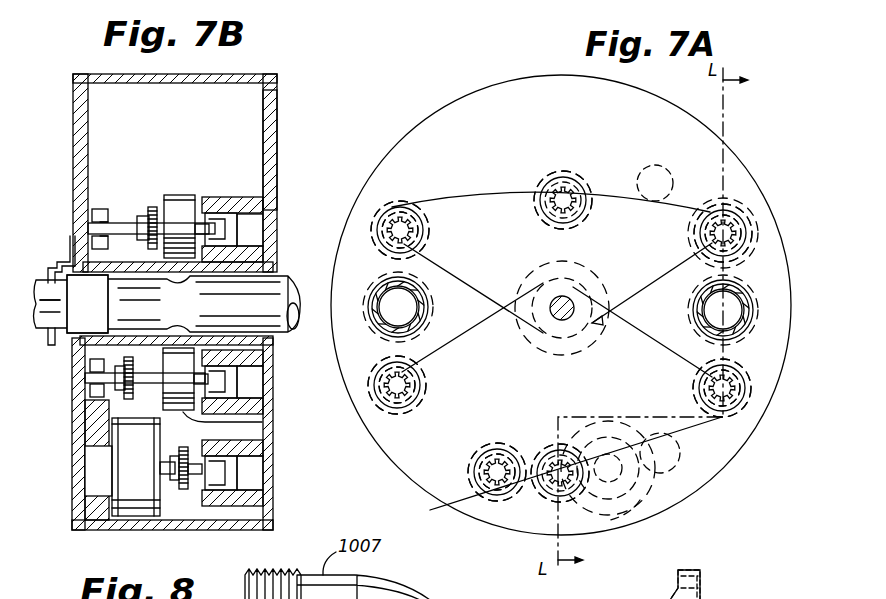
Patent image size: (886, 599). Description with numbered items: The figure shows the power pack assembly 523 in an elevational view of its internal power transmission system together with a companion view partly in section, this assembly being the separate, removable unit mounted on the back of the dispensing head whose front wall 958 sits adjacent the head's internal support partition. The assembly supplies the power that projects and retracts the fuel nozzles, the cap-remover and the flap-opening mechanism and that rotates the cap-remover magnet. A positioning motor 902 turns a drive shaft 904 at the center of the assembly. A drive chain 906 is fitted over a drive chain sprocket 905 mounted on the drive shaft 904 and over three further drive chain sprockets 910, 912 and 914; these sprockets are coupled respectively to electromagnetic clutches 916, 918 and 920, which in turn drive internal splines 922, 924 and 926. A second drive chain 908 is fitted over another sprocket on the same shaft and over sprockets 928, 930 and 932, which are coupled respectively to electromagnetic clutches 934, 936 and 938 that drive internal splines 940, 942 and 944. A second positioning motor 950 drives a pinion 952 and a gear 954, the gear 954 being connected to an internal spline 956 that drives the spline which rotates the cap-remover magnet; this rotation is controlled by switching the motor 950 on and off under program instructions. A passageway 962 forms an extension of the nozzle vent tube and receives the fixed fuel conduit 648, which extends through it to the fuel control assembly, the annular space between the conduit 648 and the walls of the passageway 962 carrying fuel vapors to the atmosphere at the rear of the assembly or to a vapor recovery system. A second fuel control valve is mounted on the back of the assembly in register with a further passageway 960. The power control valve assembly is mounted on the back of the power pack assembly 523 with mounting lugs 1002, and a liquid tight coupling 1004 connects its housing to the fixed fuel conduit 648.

In FIG. 7B, the power pack assembly 523 is at (258, 68).
In FIG. 7A, the power pack assembly 523 is at (478, 92).
In FIG. 7B, the front wall 958 is at (277, 118).
In FIG. 7B, the electromagnetic clutch 920 is at (178, 196).
In FIG. 7A, the electromagnetic clutch 920 is at (730, 190).
In FIG. 7B, the drive chain sprocket 914 is at (152, 213).
In FIG. 7A, the drive chain sprocket 914 is at (738, 212).
In FIG. 7B, the mounting lugs 1002 is at (52, 262).
In FIG. 7B, the internal spline 926 is at (264, 232).
In FIG. 7A, the internal spline 926 is at (748, 230).
In FIG. 7B, the passageway 962 is at (262, 265).
In FIG. 7A, the passageway 962 is at (758, 262).
In FIG. 7B, the fixed fuel conduit 648 is at (252, 302).
In FIG. 7A, the fixed fuel conduit 648 is at (705, 290).
In FIG. 7B, the liquid tight coupling 1004 is at (80, 318).
In FIG. 7B, the drive chain sprocket 932 is at (126, 400).
In FIG. 7A, the drive chain sprocket 932 is at (696, 374).
In FIG. 7B, the internal spline 944 is at (264, 383).
In FIG. 7A, the internal spline 944 is at (732, 395).
In FIG. 7B, the electromagnetic clutch 938 is at (262, 422).
In FIG. 7A, the electromagnetic clutch 938 is at (688, 394).
In FIG. 7B, the second positioning motor 950 is at (112, 465).
In FIG. 7A, the second positioning motor 950 is at (656, 474).
In FIG. 7B, the internal spline 956 is at (264, 473).
In FIG. 7A, the internal spline 956 is at (535, 488).
In FIG. 7B, the gear 954 is at (184, 490).
In FIG. 7A, the gear 954 is at (598, 528).
In FIG. 7A, the drive chain 906 is at (497, 186).
In FIG. 7A, the internal spline 924 is at (561, 188).
In FIG. 7A, the electromagnetic clutch 918 is at (603, 160).
In FIG. 7A, the drive chain sprocket 910 is at (373, 213).
In FIG. 7A, the electromagnetic clutch 916 is at (428, 200).
In FIG. 7A, the internal spline 922 is at (405, 230).
In FIG. 7A, the drive chain sprocket 912 is at (582, 205).
In FIG. 7A, the positioning motor 902 is at (525, 268).
In FIG. 7A, the drive shaft 904 is at (574, 300).
In FIG. 7A, the passageway 960 is at (400, 275).
In FIG. 7A, the drive chain sprocket 905 is at (606, 333).
In FIG. 7A, the electromagnetic clutch 934 is at (430, 366).
In FIG. 7A, the drive chain sprocket 928 is at (412, 385).
In FIG. 7A, the internal spline 940 is at (378, 364).
In FIG. 7A, the electromagnetic clutch 936 is at (478, 452).
In FIG. 7A, the drive chain sprocket 930 is at (500, 450).
In FIG. 7A, the drive chain 908 is at (696, 428).
In FIG. 7A, the internal spline 942 is at (480, 488).
In FIG. 7A, the pinion 952 is at (650, 510).